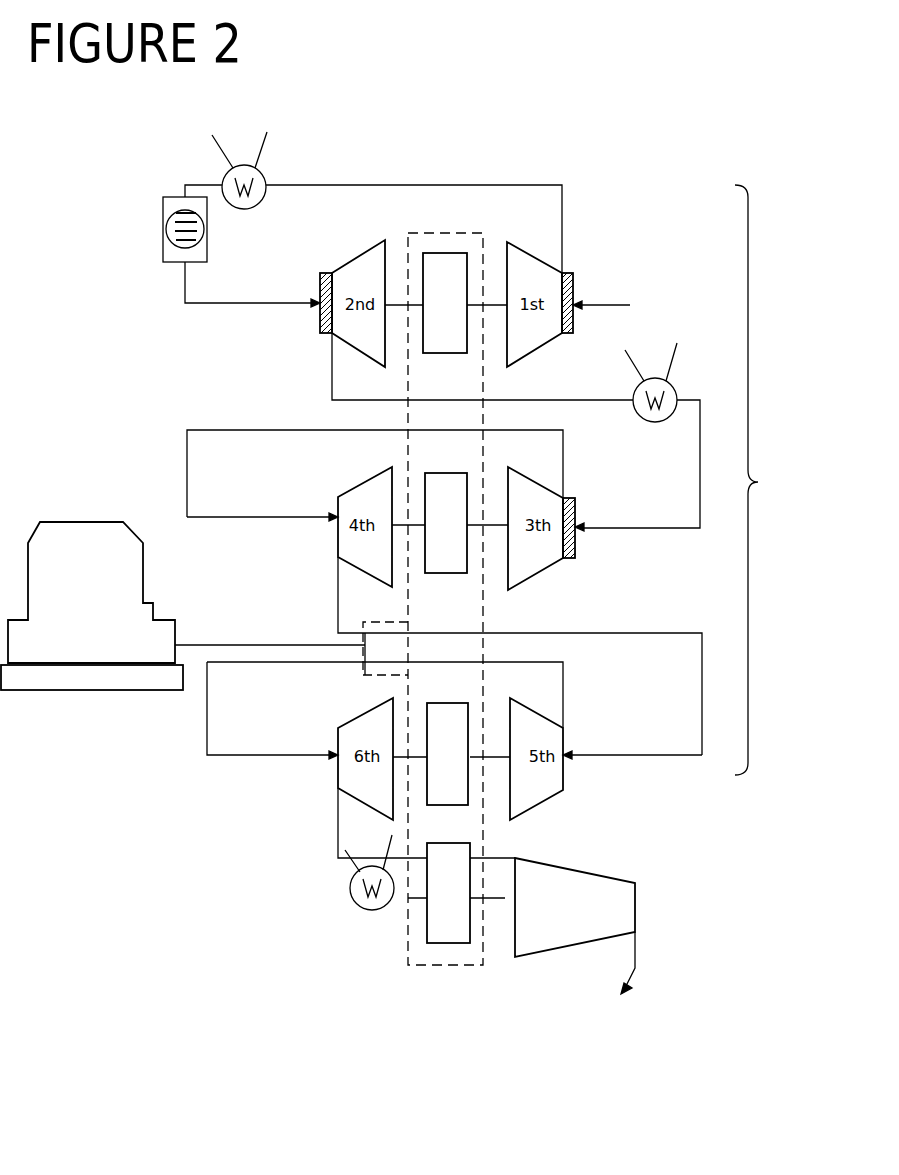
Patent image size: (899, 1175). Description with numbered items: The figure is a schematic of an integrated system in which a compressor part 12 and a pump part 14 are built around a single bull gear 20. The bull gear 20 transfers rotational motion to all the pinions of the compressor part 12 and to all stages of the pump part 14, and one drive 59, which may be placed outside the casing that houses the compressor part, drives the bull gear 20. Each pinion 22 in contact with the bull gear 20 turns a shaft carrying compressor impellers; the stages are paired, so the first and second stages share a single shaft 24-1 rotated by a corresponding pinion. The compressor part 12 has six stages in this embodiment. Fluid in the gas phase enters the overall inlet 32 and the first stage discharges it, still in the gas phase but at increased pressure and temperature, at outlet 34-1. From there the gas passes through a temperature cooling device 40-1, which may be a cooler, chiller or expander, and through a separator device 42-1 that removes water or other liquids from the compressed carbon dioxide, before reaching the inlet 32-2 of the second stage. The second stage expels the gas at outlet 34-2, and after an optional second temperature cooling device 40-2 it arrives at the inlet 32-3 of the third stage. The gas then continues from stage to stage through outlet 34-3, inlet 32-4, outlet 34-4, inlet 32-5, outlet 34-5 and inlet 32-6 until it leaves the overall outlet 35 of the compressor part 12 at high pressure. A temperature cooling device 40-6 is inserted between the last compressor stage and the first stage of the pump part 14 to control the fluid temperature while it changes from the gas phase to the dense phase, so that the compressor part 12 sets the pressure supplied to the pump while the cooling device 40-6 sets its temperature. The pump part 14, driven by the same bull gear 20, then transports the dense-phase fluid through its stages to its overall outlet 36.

The compressor part 12 is at (761, 480).
The pump part 14 is at (636, 883).
The bull gear 20 is at (462, 232).
The pinion 22 is at (436, 312).
The shaft 24-1 is at (398, 303).
The overall inlet 32 is at (616, 303).
The inlet of the second stage 32-2 is at (288, 308).
The inlet of the third stage 32-3 is at (610, 527).
The inlet of the fourth stage 32-4 is at (262, 517).
The inlet of the fifth stage 32-5 is at (618, 755).
The inlet of the sixth stage 32-6 is at (260, 755).
The outlet of the first stage 34-1 is at (563, 235).
The outlet of the second stage 34-2 is at (332, 373).
The outlet of the third stage 34-3 is at (563, 452).
The outlet of the fourth stage 34-4 is at (338, 593).
The outlet of the fifth stage 34-5 is at (565, 690).
The overall outlet 35 is at (338, 808).
The overall outlet 36 is at (640, 964).
The temperature cooling device 40-1 is at (259, 205).
The second temperature cooling device 40-2 is at (686, 381).
The temperature cooling device 40-6 is at (358, 908).
The separator device 42-1 is at (163, 233).
The drive 59 is at (75, 521).